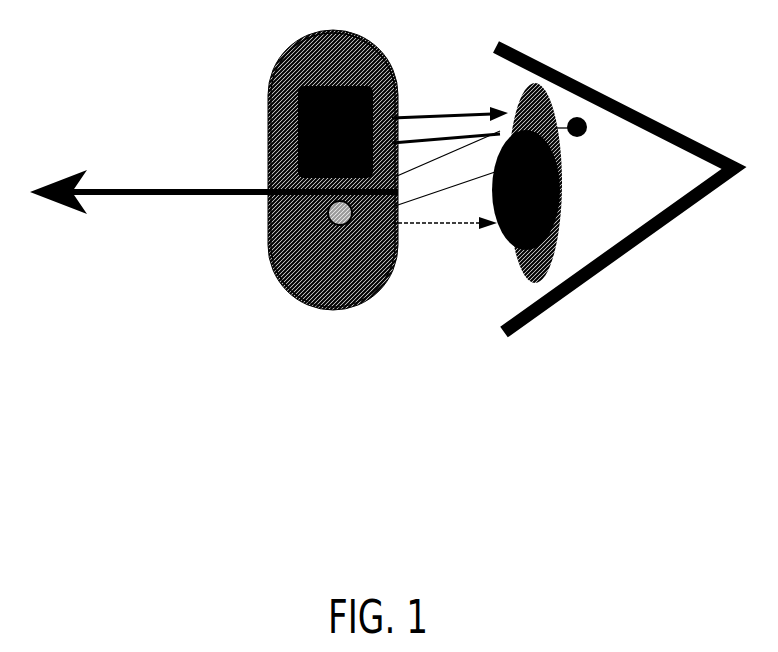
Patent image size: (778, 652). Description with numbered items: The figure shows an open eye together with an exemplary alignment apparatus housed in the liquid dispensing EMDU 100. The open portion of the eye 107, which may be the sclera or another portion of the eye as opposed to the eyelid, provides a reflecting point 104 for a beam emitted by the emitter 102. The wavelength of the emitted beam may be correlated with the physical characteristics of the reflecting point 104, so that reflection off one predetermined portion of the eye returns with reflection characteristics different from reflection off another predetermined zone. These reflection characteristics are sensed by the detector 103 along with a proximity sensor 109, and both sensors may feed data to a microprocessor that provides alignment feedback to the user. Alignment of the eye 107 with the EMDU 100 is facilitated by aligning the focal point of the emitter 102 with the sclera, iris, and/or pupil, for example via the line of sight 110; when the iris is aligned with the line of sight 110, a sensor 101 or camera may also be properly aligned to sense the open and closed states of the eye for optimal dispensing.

The liquid dispensing EMDU 100 is at (290, 300).
The sensor 101 is at (297, 125).
The emitter 102 is at (350, 103).
The detector 103 is at (397, 140).
The reflecting point 104 is at (586, 118).
The open portion of the eye 107 is at (613, 189).
The proximity sensor 109 is at (342, 228).
The line of sight 110 is at (72, 215).